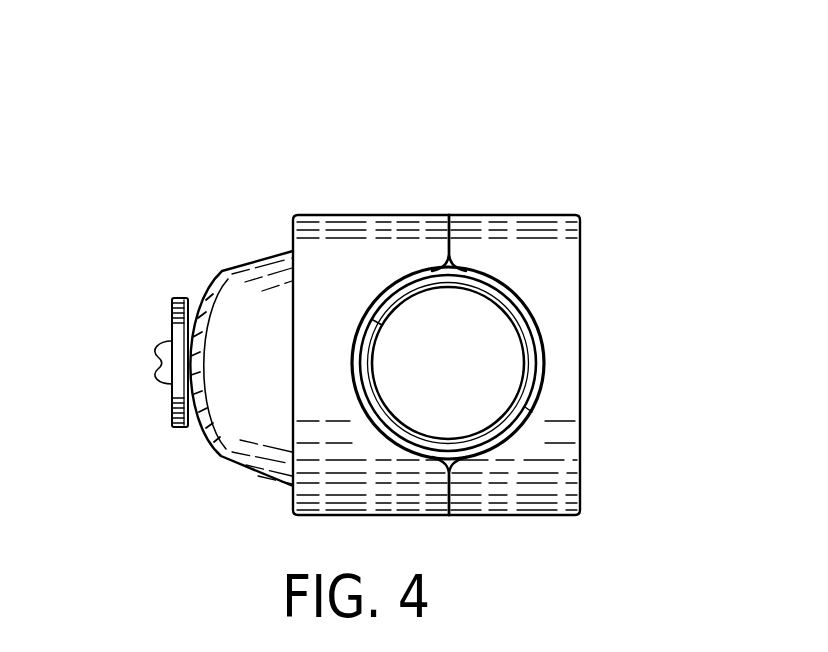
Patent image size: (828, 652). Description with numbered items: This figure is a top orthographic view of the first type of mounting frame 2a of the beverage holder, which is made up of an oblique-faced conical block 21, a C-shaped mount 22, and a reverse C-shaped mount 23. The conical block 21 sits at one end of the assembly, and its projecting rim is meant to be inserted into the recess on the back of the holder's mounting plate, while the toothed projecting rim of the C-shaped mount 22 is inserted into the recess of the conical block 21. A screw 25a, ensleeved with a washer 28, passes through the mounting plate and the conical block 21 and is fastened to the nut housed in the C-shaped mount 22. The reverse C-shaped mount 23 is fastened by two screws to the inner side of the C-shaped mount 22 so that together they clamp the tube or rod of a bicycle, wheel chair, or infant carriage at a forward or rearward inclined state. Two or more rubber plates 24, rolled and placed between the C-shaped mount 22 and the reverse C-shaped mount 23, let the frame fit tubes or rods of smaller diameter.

The first type of mounting frame 2a is at (437, 177).
The oblique-faced conical block 21 is at (263, 250).
The C-shaped mount 22 is at (376, 212).
The reverse C-shaped mount 23 is at (510, 212).
The rubber plates 24 is at (547, 355).
The screw 25a is at (155, 340).
The washer 28 is at (187, 293).